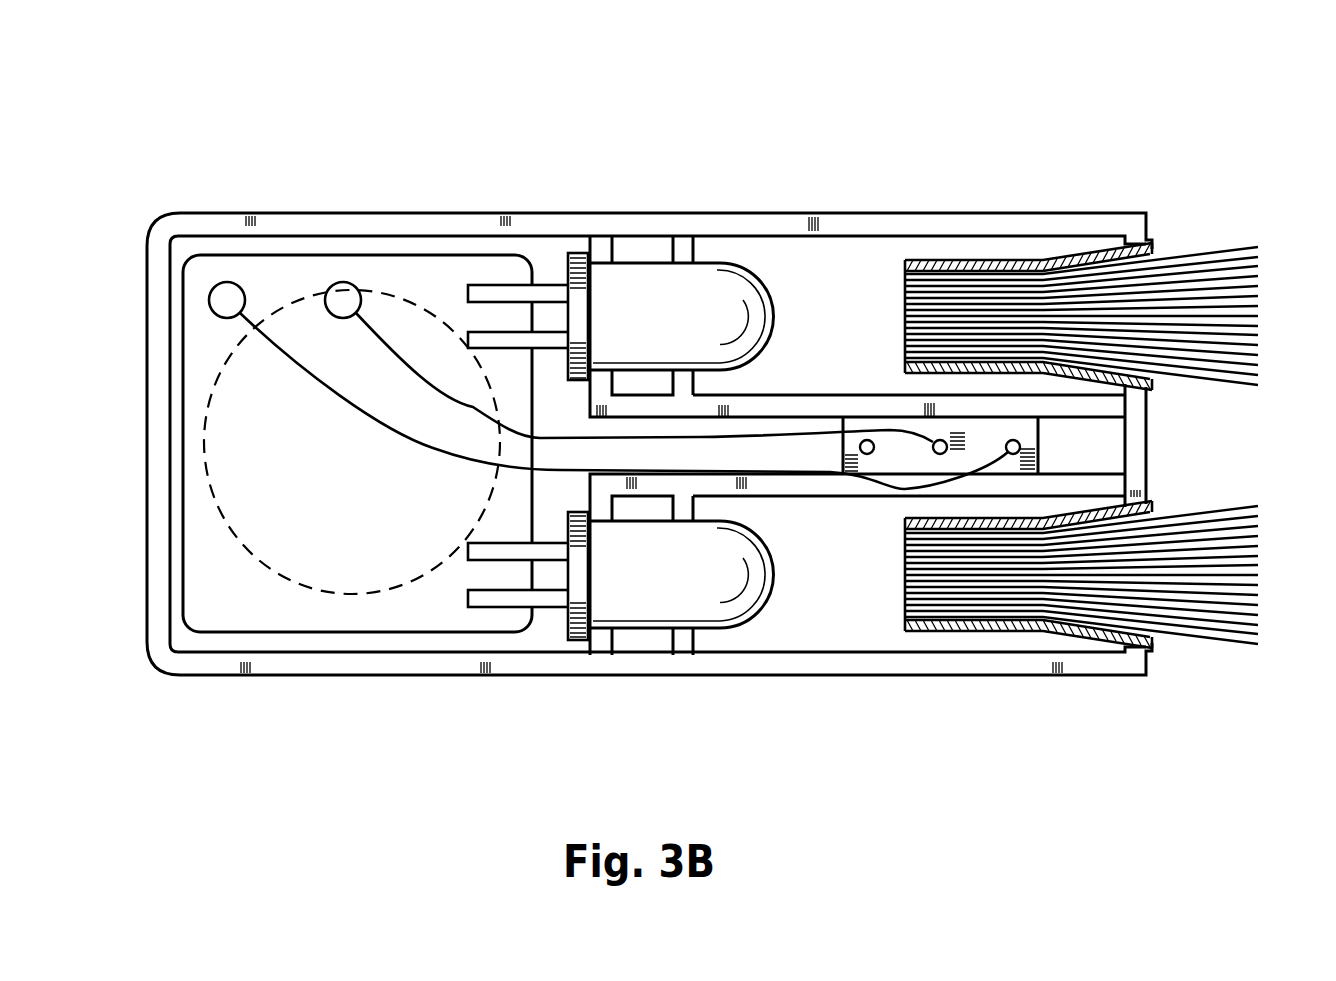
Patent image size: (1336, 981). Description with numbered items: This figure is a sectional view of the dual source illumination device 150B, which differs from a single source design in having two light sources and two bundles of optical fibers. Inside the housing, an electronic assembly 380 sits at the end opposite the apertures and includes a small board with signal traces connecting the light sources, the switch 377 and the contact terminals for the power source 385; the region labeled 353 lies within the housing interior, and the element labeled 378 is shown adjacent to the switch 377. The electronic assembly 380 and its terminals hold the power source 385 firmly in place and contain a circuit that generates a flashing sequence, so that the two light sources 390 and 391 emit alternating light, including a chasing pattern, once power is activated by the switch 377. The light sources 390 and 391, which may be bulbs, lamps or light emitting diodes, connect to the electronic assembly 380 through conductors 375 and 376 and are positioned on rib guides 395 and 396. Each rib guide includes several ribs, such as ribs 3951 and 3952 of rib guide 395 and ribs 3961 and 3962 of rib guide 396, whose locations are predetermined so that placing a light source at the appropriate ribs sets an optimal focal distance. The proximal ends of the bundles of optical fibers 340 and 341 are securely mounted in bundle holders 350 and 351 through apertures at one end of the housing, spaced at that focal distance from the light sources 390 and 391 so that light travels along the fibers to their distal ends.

The dual source illumination device 150B is at (1158, 152).
The bundle of optical fibers 340 is at (1073, 270).
The bundle of optical fibers 341 is at (1133, 620).
The bundle holder 350 is at (955, 262).
The bundle holder 351 is at (1050, 635).
The housing 353 is at (823, 300).
The conductor 375 is at (548, 290).
The conductor 376 is at (543, 602).
The switch 377 is at (937, 433).
The contact pad 378 is at (817, 497).
The electronic assembly 380 is at (432, 613).
The power source 385 is at (293, 583).
The light source 390 is at (738, 262).
The light source 391 is at (760, 612).
The rib guide 395 is at (845, 255).
The upper LED holder first tab 3951 is at (603, 248).
The upper LED holder second tab 3952 is at (694, 275).
The rib guide 396 is at (828, 641).
The lower LED holder first tab 3961 is at (600, 642).
The lower LED holder second tab 3962 is at (683, 645).